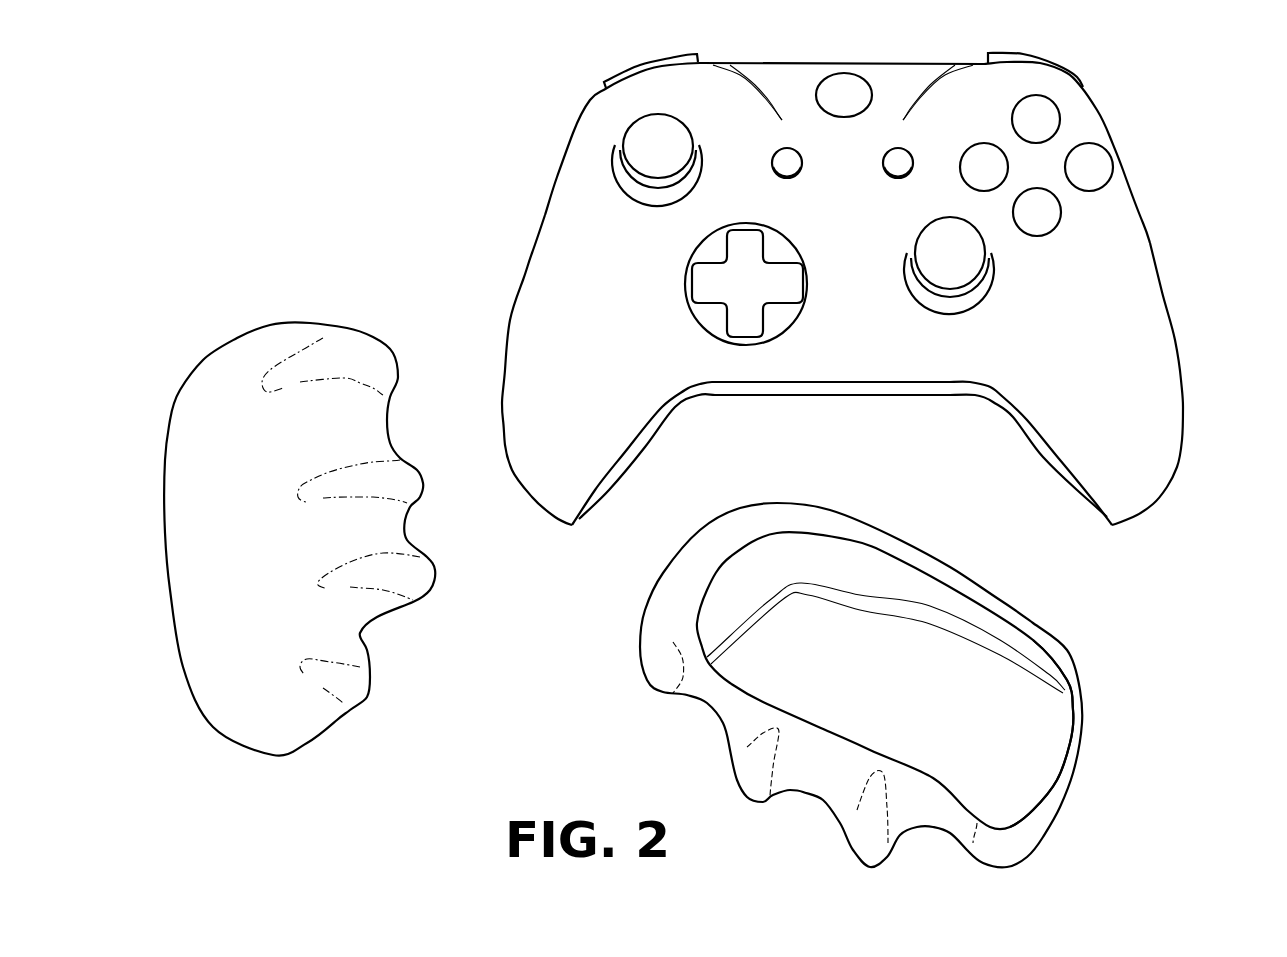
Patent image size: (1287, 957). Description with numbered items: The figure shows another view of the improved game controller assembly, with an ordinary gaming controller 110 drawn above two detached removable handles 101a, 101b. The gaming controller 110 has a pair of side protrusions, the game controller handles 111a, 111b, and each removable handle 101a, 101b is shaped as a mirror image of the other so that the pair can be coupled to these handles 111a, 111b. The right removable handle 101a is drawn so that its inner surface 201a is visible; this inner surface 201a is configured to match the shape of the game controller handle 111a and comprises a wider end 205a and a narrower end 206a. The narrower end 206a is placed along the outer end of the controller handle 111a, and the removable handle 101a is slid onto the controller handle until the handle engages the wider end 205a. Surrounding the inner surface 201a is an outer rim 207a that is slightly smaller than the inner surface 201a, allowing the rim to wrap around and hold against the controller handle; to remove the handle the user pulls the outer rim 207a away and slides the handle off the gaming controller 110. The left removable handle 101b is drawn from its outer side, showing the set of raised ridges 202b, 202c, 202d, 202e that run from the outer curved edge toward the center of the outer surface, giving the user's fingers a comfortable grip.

The gaming controller 110 is at (852, 289).
The game controller handle 111a is at (686, 370).
The game controller handle 111b is at (1115, 384).
The removable handle 101a is at (915, 685).
The removable handle 101b is at (328, 533).
The inner surface 201a is at (885, 680).
The wider end 205a is at (886, 626).
The narrower end 206a is at (1006, 733).
The outer rim 207a is at (875, 685).
The raised ridge 202b is at (370, 353).
The raised ridge 202c is at (395, 474).
The raised ridge 202d is at (427, 574).
The finger contour 202e is at (386, 681).